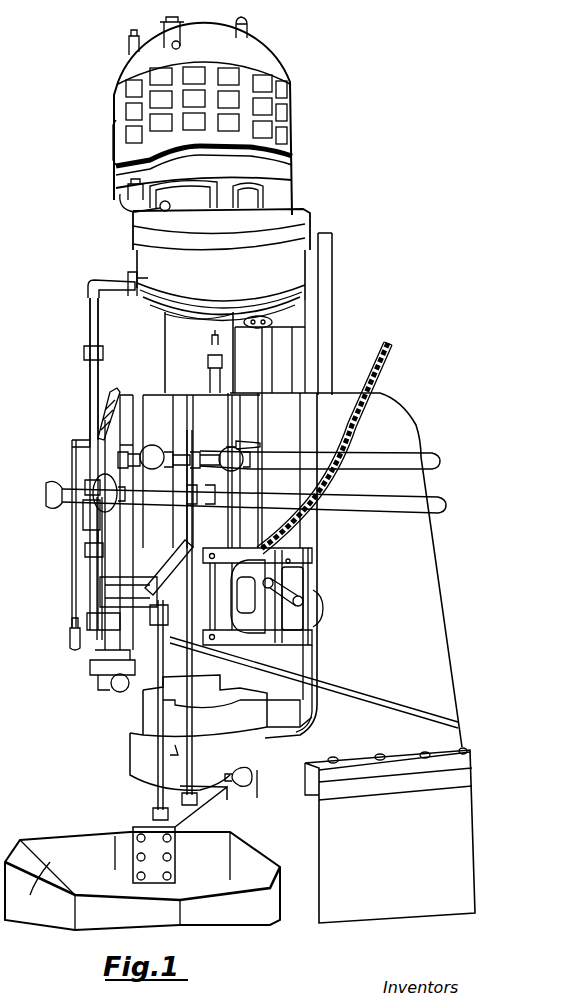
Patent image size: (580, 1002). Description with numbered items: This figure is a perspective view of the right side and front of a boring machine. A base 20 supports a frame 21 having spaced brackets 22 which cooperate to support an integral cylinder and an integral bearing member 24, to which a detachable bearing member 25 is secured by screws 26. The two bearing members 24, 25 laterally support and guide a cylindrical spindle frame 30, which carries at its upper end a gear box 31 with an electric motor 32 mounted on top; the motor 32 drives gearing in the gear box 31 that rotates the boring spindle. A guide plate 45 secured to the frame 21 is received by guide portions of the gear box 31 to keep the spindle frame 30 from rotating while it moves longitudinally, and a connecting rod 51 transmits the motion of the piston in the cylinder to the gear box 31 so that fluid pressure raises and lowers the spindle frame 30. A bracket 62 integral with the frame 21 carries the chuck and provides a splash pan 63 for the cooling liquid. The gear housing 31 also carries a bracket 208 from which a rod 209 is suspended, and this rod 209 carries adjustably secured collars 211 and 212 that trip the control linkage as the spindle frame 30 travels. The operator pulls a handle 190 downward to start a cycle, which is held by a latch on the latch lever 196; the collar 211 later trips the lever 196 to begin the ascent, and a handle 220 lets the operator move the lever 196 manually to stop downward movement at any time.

The base 20 is at (375, 903).
The frame 21 is at (450, 647).
The spaced brackets 22 is at (427, 600).
The integral bearing member 24 is at (247, 423).
The detachable bearing member 25 is at (165, 396).
The screws 26 is at (188, 394).
The spindle frame 30 is at (178, 338).
The gear box 31 is at (150, 252).
The electric motor 32 is at (263, 172).
The guide plate 45 is at (322, 345).
The connecting rod 51 is at (260, 358).
The bracket 62 is at (211, 626).
The splash pan 63 is at (140, 764).
The handle 190 is at (112, 690).
The latch lever 196 is at (83, 435).
The bracket 208 is at (88, 288).
The rod 209 is at (90, 314).
The collar 211 is at (84, 352).
The collar 212 is at (95, 549).
The handle 220 is at (70, 630).